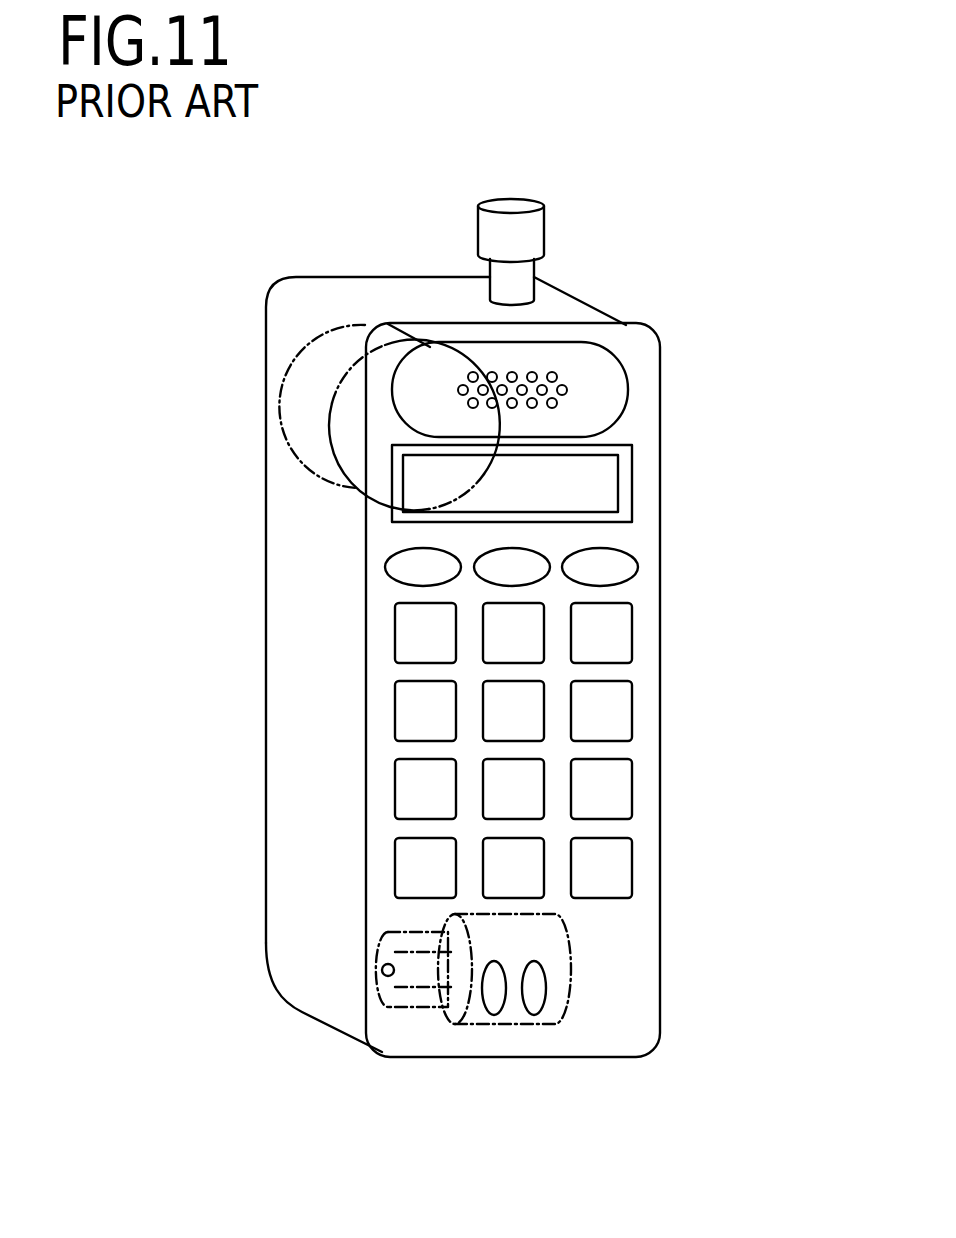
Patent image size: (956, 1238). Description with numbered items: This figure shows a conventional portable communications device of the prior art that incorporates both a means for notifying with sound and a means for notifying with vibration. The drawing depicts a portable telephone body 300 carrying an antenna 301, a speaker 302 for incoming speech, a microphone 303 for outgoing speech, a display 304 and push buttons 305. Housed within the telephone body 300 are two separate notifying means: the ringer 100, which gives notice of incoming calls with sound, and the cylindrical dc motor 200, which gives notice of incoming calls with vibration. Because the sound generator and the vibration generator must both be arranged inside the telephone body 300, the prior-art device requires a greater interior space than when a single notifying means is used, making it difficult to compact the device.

The ringer 100 is at (327, 357).
The cylindrical dc motor 200 is at (530, 938).
The portable telephone body 300 is at (280, 487).
The antenna 301 is at (534, 246).
The speaker 302 is at (558, 377).
The microphone 303 is at (483, 1000).
The display 304 is at (522, 488).
The push buttons 305 is at (522, 720).